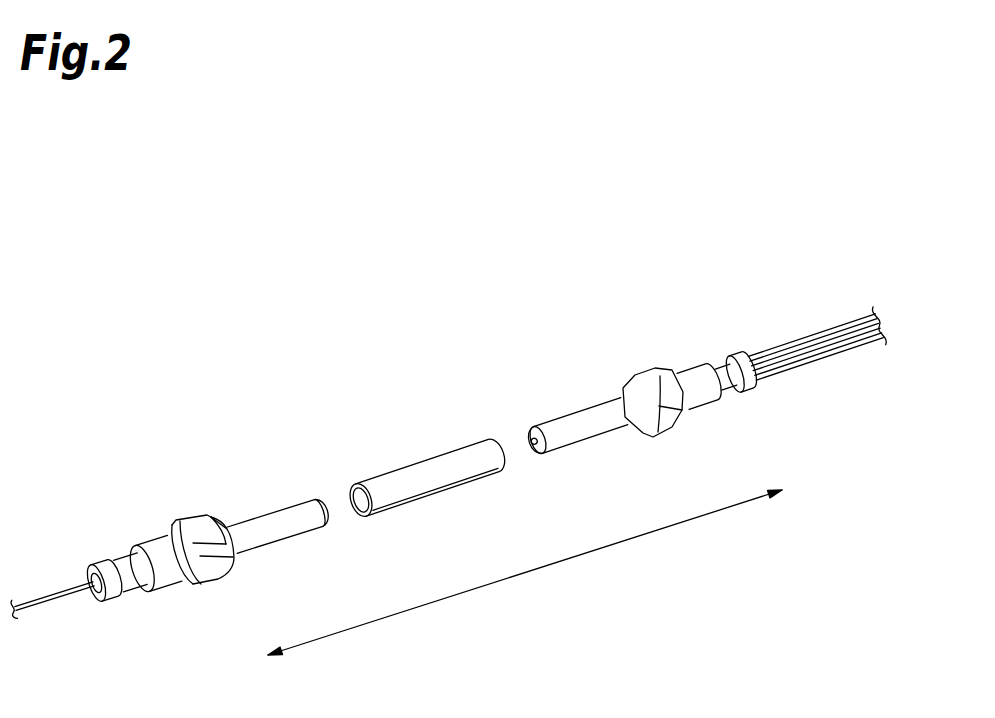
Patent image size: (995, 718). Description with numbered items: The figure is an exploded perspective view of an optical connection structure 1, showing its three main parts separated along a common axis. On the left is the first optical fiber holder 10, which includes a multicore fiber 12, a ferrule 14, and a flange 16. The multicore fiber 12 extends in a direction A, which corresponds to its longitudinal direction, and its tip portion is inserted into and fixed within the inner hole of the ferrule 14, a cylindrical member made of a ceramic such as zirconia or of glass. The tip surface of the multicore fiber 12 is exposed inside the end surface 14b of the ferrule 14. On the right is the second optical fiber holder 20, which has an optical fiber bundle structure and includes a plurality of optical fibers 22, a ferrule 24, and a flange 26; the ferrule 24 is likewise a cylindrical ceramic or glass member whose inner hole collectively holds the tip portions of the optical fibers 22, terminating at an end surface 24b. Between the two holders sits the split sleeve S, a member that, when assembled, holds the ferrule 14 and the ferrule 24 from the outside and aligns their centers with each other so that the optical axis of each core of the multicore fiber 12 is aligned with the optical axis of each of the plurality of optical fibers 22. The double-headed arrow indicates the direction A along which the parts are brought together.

The optical connection structure 1 is at (298, 322).
The first optical fiber holder 10 is at (158, 500).
The multicore fiber 12 is at (50, 593).
The ferrule 14 is at (322, 502).
The end surface 14b is at (320, 518).
The flange 16 is at (182, 522).
The second optical fiber holder 20 is at (681, 340).
The optical fibers 22 is at (805, 340).
The ferrule 24 is at (551, 432).
The end surface 24b is at (534, 456).
The flange 26 is at (637, 370).
The split sleeve S is at (414, 458).
The direction A is at (570, 560).